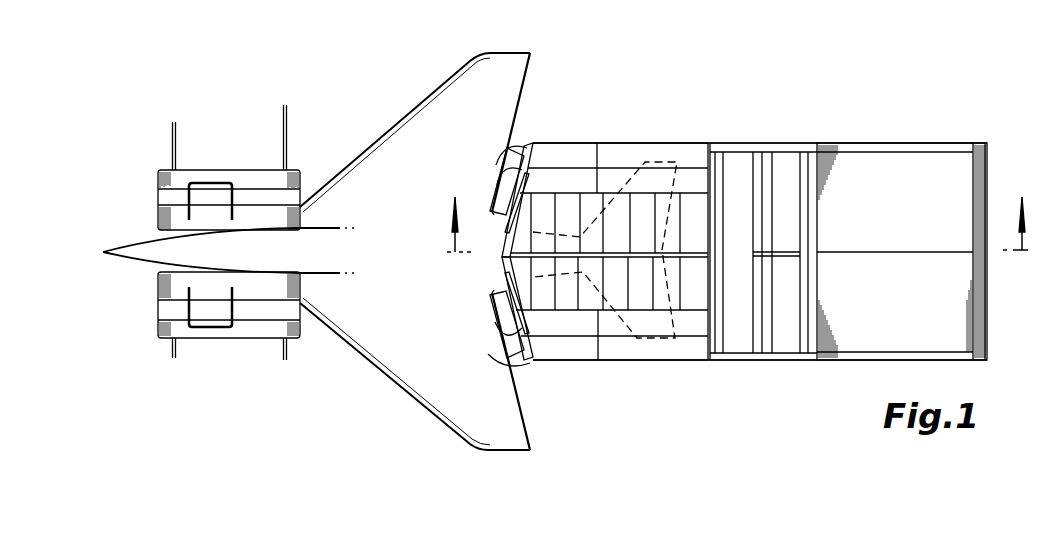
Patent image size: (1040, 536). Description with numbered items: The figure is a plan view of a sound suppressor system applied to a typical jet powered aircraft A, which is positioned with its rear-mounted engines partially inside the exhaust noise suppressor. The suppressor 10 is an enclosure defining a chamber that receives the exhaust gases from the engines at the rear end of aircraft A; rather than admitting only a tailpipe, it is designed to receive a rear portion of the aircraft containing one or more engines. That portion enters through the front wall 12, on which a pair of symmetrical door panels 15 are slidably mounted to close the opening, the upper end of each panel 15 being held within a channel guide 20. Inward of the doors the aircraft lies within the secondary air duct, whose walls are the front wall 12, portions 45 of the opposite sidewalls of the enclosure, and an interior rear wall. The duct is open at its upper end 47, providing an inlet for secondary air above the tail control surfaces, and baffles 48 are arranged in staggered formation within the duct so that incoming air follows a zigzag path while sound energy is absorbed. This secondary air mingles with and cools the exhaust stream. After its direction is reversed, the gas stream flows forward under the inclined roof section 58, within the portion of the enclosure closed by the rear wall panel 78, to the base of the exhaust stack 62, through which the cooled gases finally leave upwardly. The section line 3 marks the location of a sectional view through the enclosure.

The suppressor 10 is at (800, 132).
The front wall 12 is at (505, 242).
The door panel 15 is at (507, 147).
The channel guide 20 is at (505, 177).
The sidewall portion 45 is at (700, 141).
The upper end of secondary air duct 47 is at (577, 178).
The baffle 48 is at (647, 287).
The inclined roof section 58 is at (913, 219).
The exhaust stack 62 is at (813, 337).
The rear wall panel 78 is at (990, 335).
The section line 3- 3 is at (739, 240).
The aircraft A is at (385, 371).